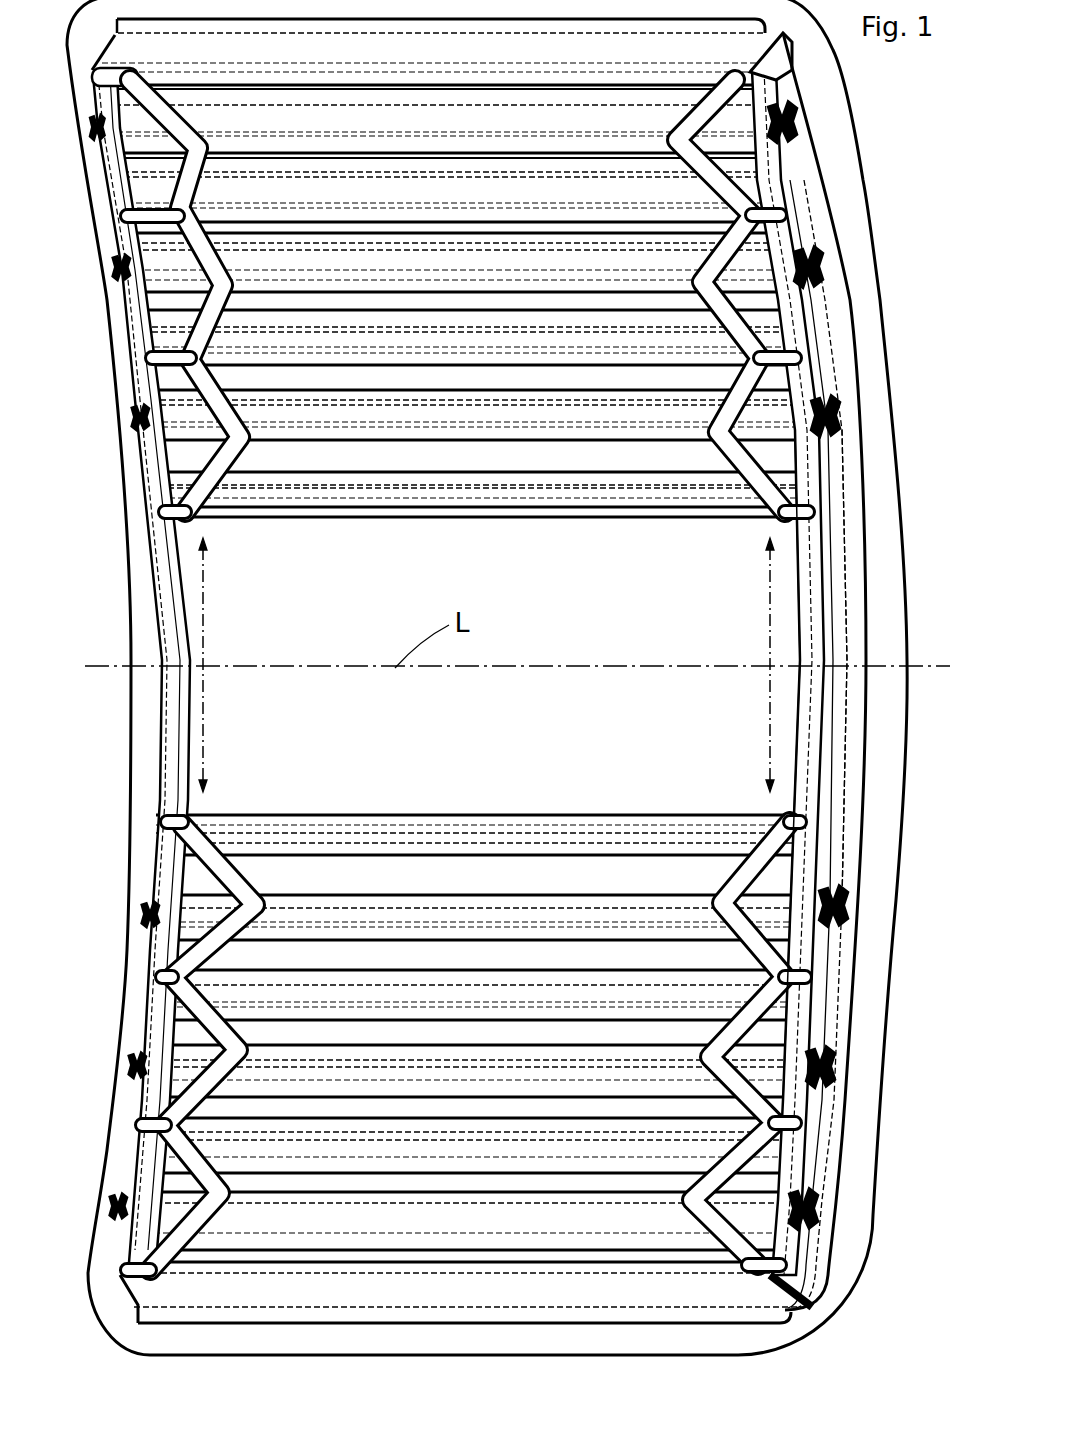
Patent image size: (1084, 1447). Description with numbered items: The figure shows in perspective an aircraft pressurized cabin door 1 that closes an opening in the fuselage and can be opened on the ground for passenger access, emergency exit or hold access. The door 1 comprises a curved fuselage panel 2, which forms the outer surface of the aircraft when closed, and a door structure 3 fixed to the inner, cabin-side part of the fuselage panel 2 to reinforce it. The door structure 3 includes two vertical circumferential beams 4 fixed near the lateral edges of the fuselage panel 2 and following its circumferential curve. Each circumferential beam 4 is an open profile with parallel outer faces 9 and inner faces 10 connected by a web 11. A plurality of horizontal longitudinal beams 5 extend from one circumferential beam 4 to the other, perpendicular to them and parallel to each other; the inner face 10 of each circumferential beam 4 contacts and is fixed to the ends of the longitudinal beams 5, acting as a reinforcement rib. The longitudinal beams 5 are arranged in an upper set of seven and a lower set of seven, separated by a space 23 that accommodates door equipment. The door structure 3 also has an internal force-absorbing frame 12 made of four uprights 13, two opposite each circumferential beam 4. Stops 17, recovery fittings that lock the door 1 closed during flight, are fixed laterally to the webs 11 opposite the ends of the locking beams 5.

The aircraft pressurized cabin door 1 is at (866, 134).
The fuselage panel 2 is at (878, 332).
The door structure 3 is at (777, 65).
The circumferential beams 4 is at (793, 197).
The longitudinal beams 5 is at (400, 50).
The outer faces 9 is at (862, 635).
The inner faces 10 is at (808, 683).
The web 11 is at (838, 773).
The internal force-absorbing frame 12 is at (205, 785).
The uprights 13 is at (222, 463).
The stops 17 is at (843, 418).
The space 23 is at (487, 700).